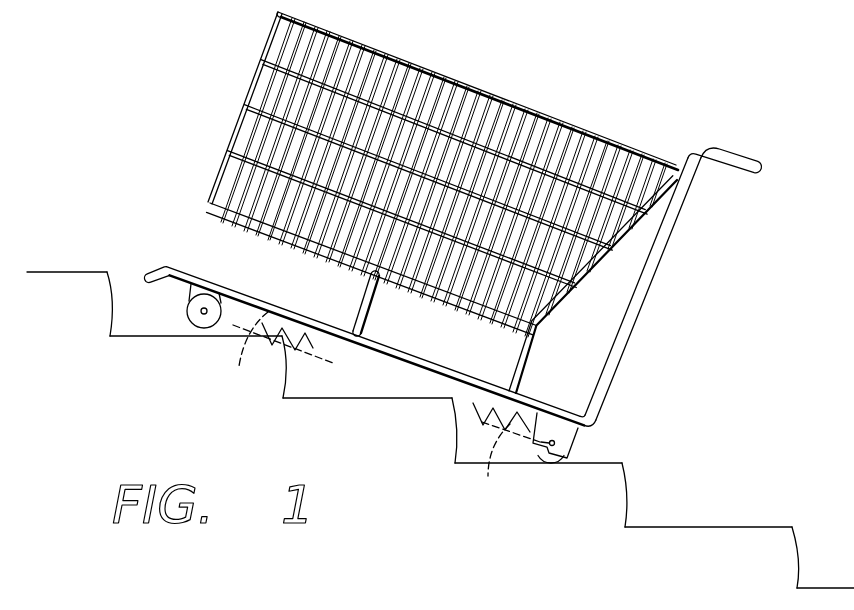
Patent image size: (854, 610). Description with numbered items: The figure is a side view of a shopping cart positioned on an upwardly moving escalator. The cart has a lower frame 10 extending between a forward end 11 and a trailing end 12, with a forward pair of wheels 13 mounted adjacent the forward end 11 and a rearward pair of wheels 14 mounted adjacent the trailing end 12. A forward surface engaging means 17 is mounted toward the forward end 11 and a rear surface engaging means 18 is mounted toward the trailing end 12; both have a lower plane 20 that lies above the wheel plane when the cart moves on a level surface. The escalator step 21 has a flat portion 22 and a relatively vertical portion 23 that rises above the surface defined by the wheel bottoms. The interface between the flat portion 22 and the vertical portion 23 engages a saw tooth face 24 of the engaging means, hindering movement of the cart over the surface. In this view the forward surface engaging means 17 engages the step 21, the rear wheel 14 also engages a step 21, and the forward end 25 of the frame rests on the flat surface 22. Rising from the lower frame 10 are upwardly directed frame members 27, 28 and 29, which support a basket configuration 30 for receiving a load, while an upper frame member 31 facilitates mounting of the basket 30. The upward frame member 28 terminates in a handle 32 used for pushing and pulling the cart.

The lower frame 10 is at (213, 270).
The forward end 11 is at (135, 267).
The trailing end 12 is at (603, 428).
The forward pair of wheels 13 is at (224, 308).
The rearward pair of wheels 14 is at (548, 462).
The forward surface engaging means 17 is at (313, 347).
The rear surface engaging means 18 is at (456, 420).
The lower plane of the surface engaging means 20 is at (365, 407).
The step 21 is at (146, 375).
The flat portion 22 is at (57, 272).
The vertical portion 23 is at (111, 325).
The saw tooth face 24 is at (297, 327).
The forward end of the frame 25 is at (113, 290).
The upwardly directed frame member 27 is at (638, 325).
The upward frame member 28 is at (568, 300).
The upwardly directed frame member 29 is at (375, 303).
The basket configuration 30 is at (252, 88).
The upper frame member 31 is at (597, 133).
The handle 32 is at (743, 152).